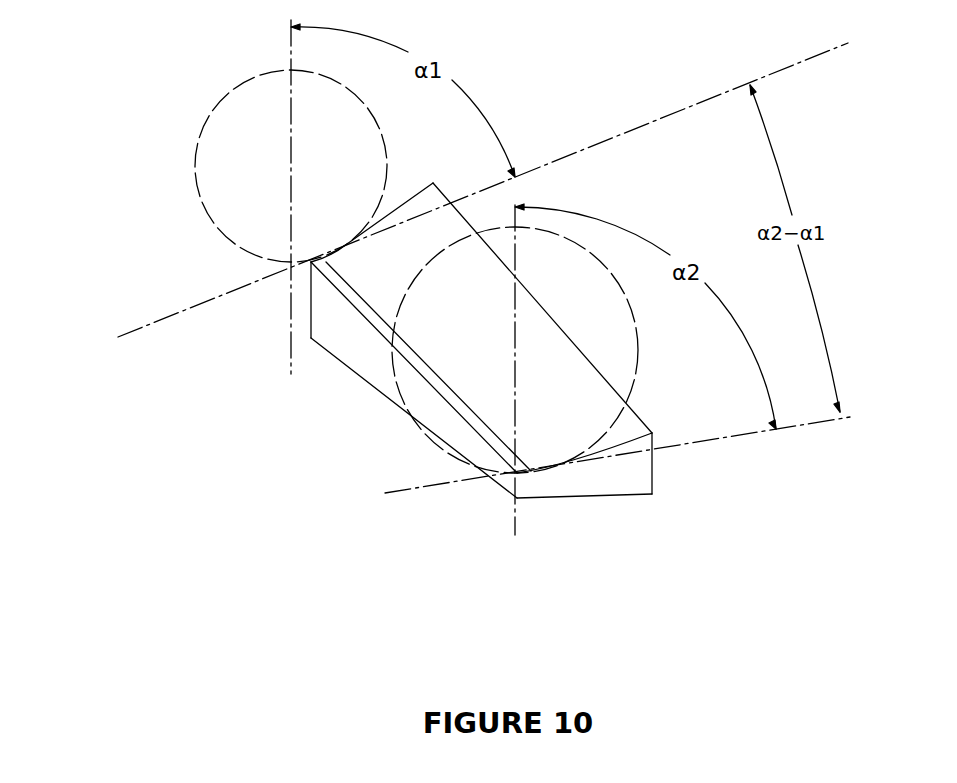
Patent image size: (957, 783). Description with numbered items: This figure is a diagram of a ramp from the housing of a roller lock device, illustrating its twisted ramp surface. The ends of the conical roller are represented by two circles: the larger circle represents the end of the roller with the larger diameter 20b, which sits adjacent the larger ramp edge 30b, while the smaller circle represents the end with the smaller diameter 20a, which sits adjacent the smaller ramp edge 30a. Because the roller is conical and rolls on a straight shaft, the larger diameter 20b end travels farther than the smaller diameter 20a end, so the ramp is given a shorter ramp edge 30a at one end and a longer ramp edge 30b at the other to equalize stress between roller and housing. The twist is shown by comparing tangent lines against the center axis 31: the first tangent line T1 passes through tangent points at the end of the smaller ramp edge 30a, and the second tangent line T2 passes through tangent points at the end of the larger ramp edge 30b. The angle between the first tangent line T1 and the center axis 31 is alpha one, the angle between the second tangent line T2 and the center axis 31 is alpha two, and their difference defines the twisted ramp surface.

The smaller diameter end of roller 20a is at (196, 180).
The larger diameter end of roller 20b is at (437, 445).
The smaller ramp edge 30a is at (418, 202).
The larger ramp edge 30b is at (630, 445).
The center axis 31 is at (515, 317).
The first tangent line T1 is at (668, 117).
The second tangent line T2 is at (738, 437).